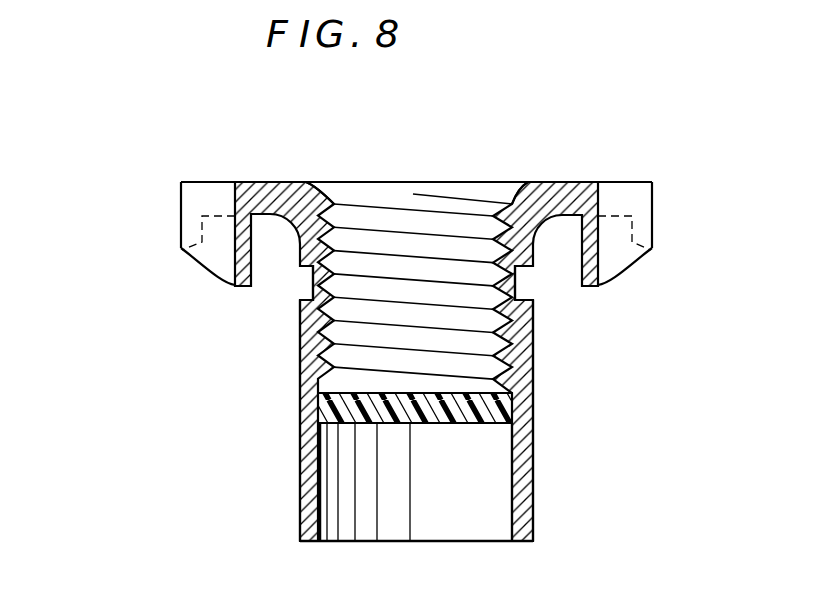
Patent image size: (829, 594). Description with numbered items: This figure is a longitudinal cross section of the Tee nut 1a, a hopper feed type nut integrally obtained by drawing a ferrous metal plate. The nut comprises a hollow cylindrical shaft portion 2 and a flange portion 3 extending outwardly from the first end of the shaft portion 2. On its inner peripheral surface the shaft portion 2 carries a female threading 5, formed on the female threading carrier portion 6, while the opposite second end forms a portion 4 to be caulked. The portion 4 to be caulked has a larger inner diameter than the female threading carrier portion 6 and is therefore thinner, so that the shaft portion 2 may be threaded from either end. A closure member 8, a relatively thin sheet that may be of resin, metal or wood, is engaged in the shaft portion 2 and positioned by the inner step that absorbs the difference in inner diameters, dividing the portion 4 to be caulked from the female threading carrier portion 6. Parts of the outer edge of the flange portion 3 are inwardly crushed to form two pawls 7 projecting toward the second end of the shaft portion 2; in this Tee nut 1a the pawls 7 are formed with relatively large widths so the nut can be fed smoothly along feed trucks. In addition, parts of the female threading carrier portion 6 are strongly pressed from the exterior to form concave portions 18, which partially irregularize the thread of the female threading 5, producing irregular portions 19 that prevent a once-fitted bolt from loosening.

The Tee nut 1a is at (453, 127).
The shaft portion 2 is at (299, 402).
The flange portion 3 is at (275, 190).
The portion to be caulked 4 is at (528, 483).
The female threading 5 is at (388, 240).
The female threading carrier portion 6 is at (535, 332).
The pawl 7 is at (232, 274).
The closure member 8 is at (357, 428).
The concave portion 18 is at (308, 280).
The irregular portion 19 is at (347, 255).